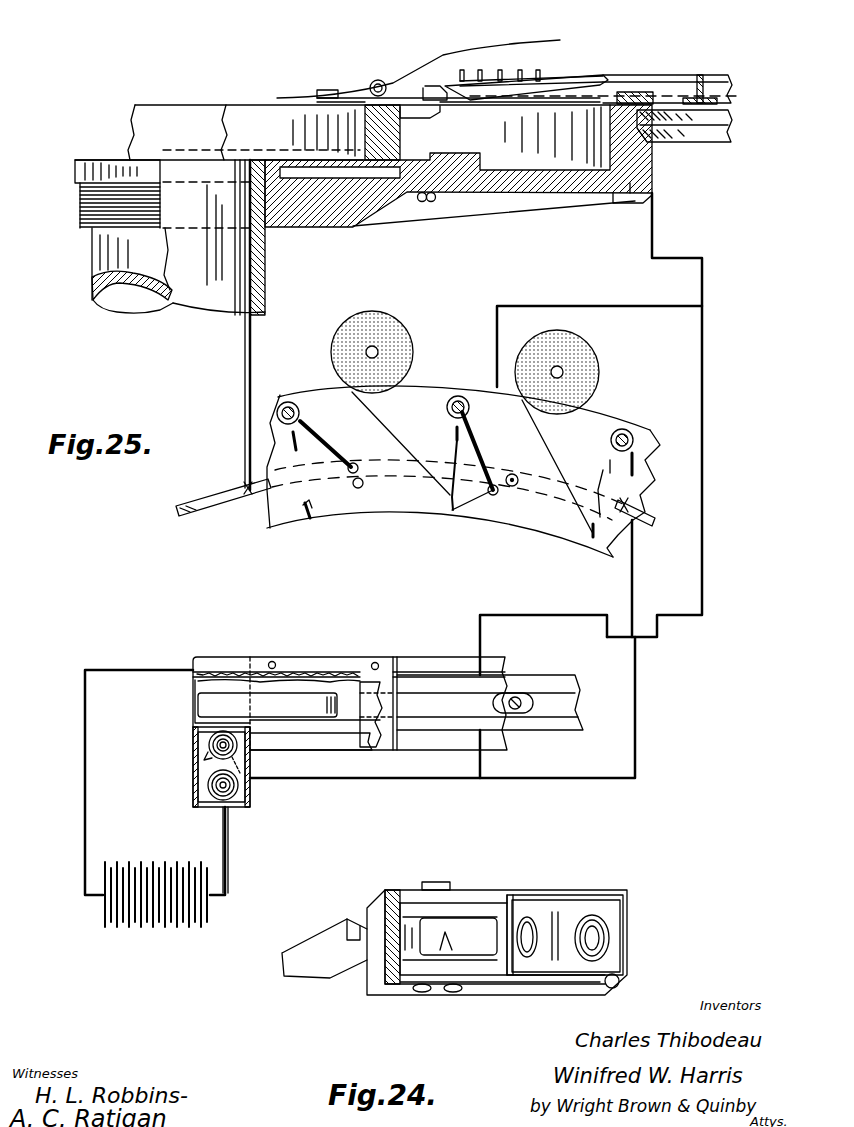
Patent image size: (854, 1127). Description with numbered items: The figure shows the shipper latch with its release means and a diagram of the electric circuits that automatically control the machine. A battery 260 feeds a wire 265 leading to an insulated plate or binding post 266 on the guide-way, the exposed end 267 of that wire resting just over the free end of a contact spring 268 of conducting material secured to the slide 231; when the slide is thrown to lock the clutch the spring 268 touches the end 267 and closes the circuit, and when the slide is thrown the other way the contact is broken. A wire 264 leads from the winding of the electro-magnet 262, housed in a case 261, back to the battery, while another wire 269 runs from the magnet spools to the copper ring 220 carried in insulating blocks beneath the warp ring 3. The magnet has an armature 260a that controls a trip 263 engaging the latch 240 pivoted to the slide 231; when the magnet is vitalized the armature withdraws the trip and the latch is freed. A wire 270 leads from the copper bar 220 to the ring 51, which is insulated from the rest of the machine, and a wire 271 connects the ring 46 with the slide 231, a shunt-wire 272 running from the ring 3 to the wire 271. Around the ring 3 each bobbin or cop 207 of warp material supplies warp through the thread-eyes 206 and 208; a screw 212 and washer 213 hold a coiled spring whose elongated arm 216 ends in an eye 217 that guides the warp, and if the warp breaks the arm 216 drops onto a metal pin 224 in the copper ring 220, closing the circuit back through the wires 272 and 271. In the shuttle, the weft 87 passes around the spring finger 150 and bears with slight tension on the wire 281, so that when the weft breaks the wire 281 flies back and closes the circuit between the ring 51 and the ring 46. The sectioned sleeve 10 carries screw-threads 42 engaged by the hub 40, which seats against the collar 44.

In FIG. 25, the weft 87 is at (487, 47).
In FIG. 25, the wire 281 is at (553, 90).
In FIG. 25, the spring finger 150 is at (617, 73).
In FIG. 25, the ring 51 is at (368, 105).
In FIG. 25, the collar or enlargement 44 is at (72, 170).
In FIG. 25, the screw-threads 42 is at (78, 207).
In FIG. 25, the sleeve 10 is at (100, 263).
In FIG. 25, the hub 40 is at (302, 217).
In FIG. 25, the ring 46 is at (627, 195).
In FIG. 25, the wire 271 is at (685, 254).
In FIG. 25, the shunt-wire 272 is at (536, 303).
In FIG. 25, the wire 270 is at (243, 385).
In FIG. 25, the spring arm 216 is at (343, 433).
In FIG. 25, the bobbin, spool, or cop of warp material 207 is at (397, 433).
In FIG. 25, the thread-eyes 208 is at (290, 440).
In FIG. 25, the washer 213 is at (613, 423).
In FIG. 25, the screw 212 is at (630, 436).
In FIG. 25, the copper ring 220 is at (200, 516).
In FIG. 25, the thread-eyes 206 is at (303, 509).
In FIG. 25, the warp ring 3 is at (407, 507).
In FIG. 25, the eye 217 is at (500, 497).
In FIG. 25, the metal pin 224 is at (520, 482).
In FIG. 25, the insulated plate or binding post 266 is at (217, 657).
In FIG. 25, the end of the wire 267 is at (353, 700).
In FIG. 25, the spring 268 is at (450, 700).
In FIG. 25, the wire 265 is at (80, 753).
In FIG. 25, the case 261 is at (193, 760).
In FIG. 24, the case 261 is at (566, 885).
In FIG. 25, the latch 240 is at (282, 712).
In FIG. 24, the latch 240 is at (437, 885).
In FIG. 25, the wire 264 is at (230, 860).
In FIG. 24, the wire 264 is at (412, 1000).
In FIG. 25, the battery 260 is at (188, 931).
In FIG. 25, the wire 269 is at (367, 780).
In FIG. 24, the wire 269 is at (457, 1000).
In FIG. 25, the slide 231 is at (450, 723).
In FIG. 24, the slide 231 is at (312, 968).
In FIG. 24, the trip 263 is at (460, 898).
In FIG. 24, the armature 260a is at (608, 897).
In FIG. 24, the electro-magnet 262 is at (621, 979).